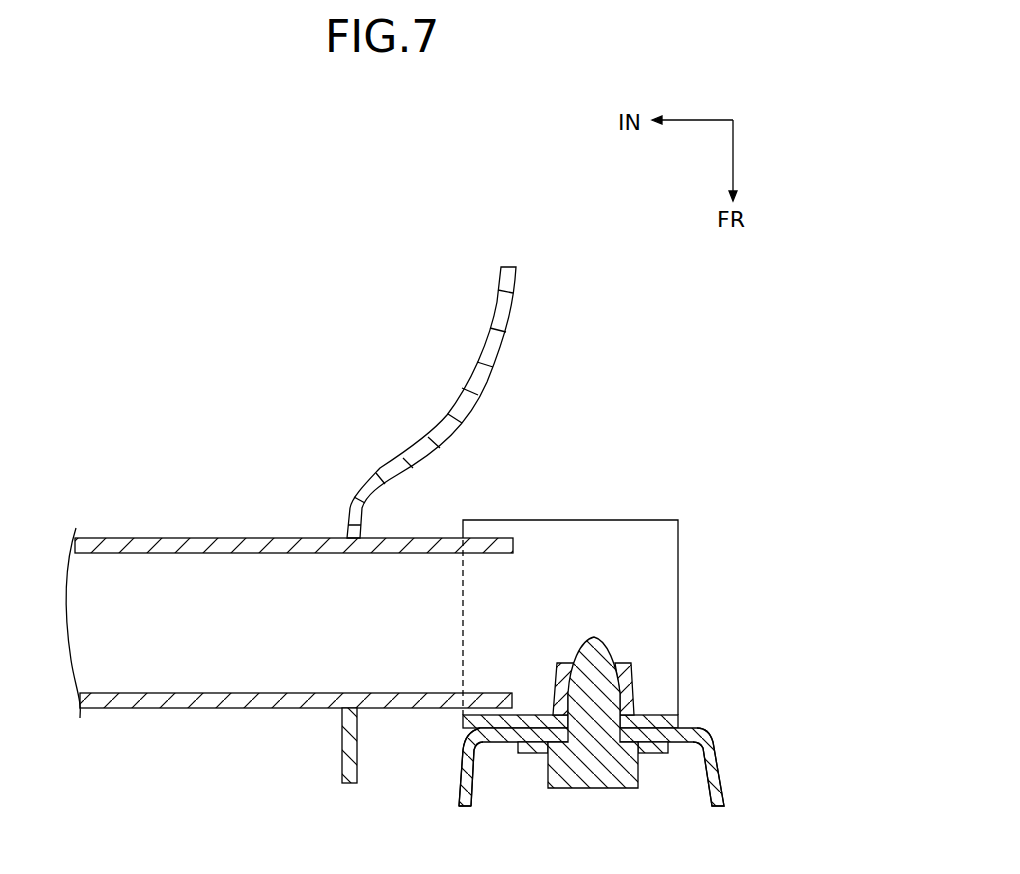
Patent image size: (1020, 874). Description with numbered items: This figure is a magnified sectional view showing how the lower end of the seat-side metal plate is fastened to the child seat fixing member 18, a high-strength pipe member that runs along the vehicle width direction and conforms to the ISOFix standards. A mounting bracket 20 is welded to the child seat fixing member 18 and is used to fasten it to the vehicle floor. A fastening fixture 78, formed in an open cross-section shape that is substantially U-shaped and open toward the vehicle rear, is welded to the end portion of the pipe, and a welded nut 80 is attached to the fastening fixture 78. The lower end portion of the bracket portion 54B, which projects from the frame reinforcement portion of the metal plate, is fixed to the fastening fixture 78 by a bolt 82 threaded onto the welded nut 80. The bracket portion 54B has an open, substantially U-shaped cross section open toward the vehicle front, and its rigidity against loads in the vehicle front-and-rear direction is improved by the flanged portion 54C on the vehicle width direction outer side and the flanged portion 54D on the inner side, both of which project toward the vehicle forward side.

The child seat fixing member 18 is at (227, 538).
The mounting bracket 20 is at (450, 407).
The fastening fixture 78 is at (678, 578).
The welded nut 80 is at (635, 682).
The bolt 82 is at (593, 788).
The bracket portion 54B is at (683, 730).
The flanged portion 54C is at (720, 777).
The flanged portion 54D is at (459, 778).